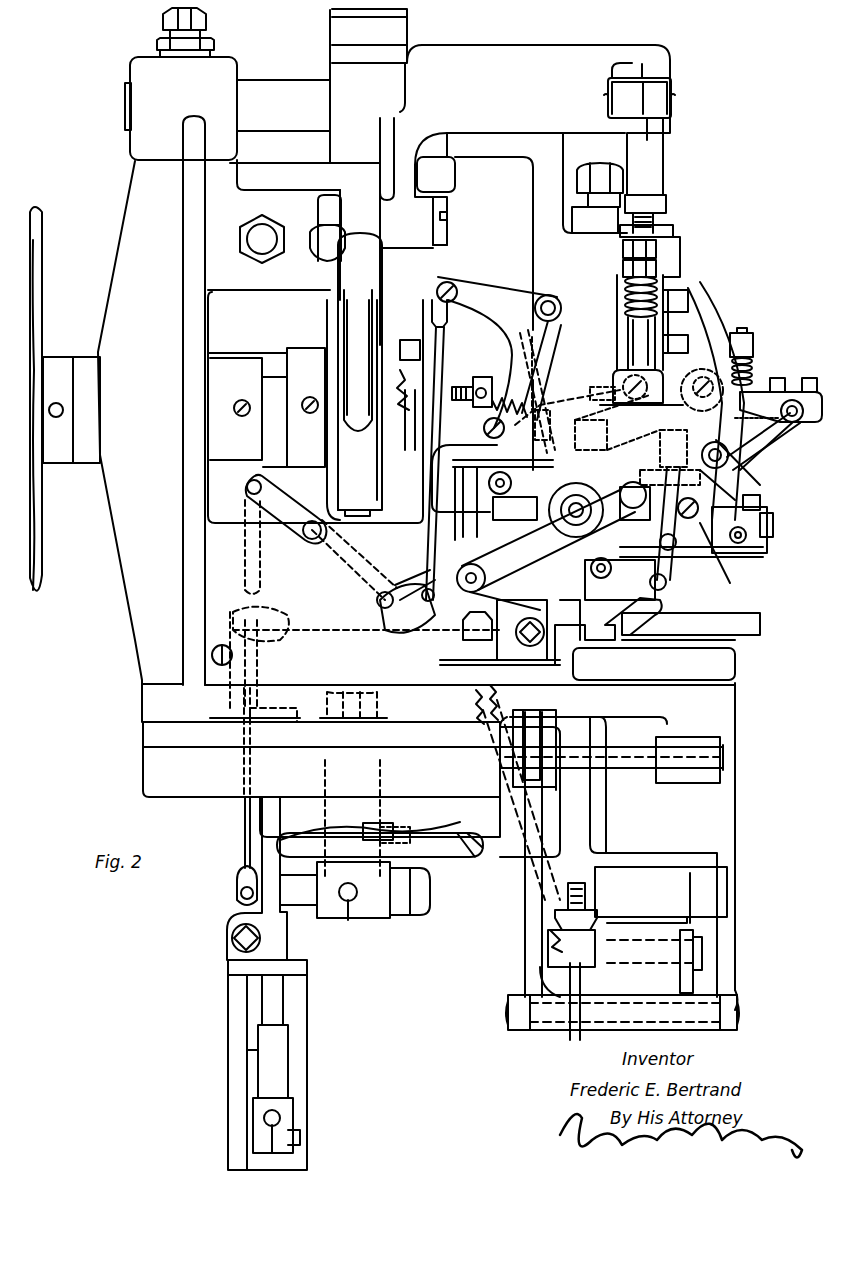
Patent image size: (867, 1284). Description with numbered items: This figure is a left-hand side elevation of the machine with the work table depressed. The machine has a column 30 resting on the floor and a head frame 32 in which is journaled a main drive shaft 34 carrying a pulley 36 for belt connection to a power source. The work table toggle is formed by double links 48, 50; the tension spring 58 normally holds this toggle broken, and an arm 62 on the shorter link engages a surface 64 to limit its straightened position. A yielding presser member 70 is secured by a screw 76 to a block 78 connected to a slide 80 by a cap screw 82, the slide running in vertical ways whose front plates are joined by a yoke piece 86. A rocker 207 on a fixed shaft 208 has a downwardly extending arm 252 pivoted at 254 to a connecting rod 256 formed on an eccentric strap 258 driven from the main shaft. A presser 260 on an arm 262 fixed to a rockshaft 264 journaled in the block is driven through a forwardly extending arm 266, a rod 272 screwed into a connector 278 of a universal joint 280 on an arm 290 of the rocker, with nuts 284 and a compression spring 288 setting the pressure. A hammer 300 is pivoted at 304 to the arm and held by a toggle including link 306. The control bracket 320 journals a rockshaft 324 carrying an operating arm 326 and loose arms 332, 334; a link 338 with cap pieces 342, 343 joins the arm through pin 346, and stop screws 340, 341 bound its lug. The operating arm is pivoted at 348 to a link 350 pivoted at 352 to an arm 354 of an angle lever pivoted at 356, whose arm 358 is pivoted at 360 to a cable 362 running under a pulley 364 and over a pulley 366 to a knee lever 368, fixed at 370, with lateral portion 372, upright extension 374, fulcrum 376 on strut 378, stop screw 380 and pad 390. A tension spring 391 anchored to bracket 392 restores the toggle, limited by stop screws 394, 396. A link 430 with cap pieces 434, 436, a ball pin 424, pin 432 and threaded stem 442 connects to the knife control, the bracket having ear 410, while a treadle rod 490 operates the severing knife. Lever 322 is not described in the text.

The column 30 is at (468, 845).
The head frame 32 is at (190, 268).
The main drive shaft 34 is at (272, 390).
The pulley 36 is at (45, 548).
The double link 48 is at (712, 818).
The shorter link 50 is at (690, 985).
The tension spring 58 is at (556, 938).
The arm 62 is at (560, 922).
The surface 64 is at (565, 895).
The yielding presser member 70 is at (600, 620).
The screw 76 is at (518, 630).
The block 78 is at (520, 512).
The slide 80 is at (583, 228).
The cap screw 82 is at (678, 448).
The yoke piece 86 is at (674, 246).
The rocker 207 is at (458, 57).
The fixed shaft 208 is at (287, 92).
The downwardly extending arm 252 is at (440, 176).
The pivot 254 is at (445, 238).
The connecting rod 256 is at (378, 280).
The eccentric strap 258 is at (348, 447).
The presser 260 is at (626, 640).
The arm 262 is at (485, 578).
The rockshaft 264 is at (578, 510).
The forwardly extending arm 266 is at (548, 540).
The rod 272 is at (655, 220).
The connector 278 is at (655, 165).
The universal joint 280 is at (645, 100).
The nuts 284 is at (665, 270).
The compression spring 288 is at (665, 290).
The arm 290 is at (640, 65).
The hammer 300 is at (645, 616).
The pivot 304 is at (620, 579).
The toggle link 306 is at (660, 590).
The bracket 320 is at (700, 340).
The arm 322 is at (712, 330).
The rockshaft 324 is at (730, 462).
The operating arm 326 is at (710, 555).
The arm 332 is at (762, 545).
The arm 334 is at (770, 425).
The link 338 is at (685, 540).
The stop screw 340 is at (670, 474).
The stop screw 341 is at (752, 506).
The cap piece 342 is at (700, 560).
The cap piece 343 is at (760, 525).
The pin 346 is at (740, 560).
The pivot 348 is at (700, 585).
The link 350 is at (530, 475).
The pivot 352 is at (487, 440).
The arm 354 is at (530, 362).
The pivot 356 is at (558, 313).
The arm 358 is at (498, 303).
The pivot 360 is at (468, 272).
The cable 362 is at (444, 365).
The pulley 364 is at (390, 645).
The pulley 366 is at (287, 640).
The knee lever 368 is at (228, 960).
The cable fixing point 370 is at (238, 893).
The lateral portion 372 is at (295, 910).
The upright extension 374 is at (360, 830).
The fulcrum 376 is at (350, 905).
The strut 378 is at (372, 808).
The stop screw 380 is at (405, 830).
The pad 390 is at (232, 1020).
The tension spring 391 is at (540, 440).
The bracket 392 is at (548, 392).
The stop screw 394 is at (470, 410).
The stop screw 396 is at (594, 388).
The ear 410 is at (752, 340).
The ball pin 424 is at (703, 384).
The link 430 is at (800, 425).
The ball-ended pin 432 is at (784, 453).
The cap piece 434 is at (617, 430).
The cap piece 436 is at (810, 392).
The threaded stem 442 is at (755, 368).
The treadle rod 490 is at (252, 518).